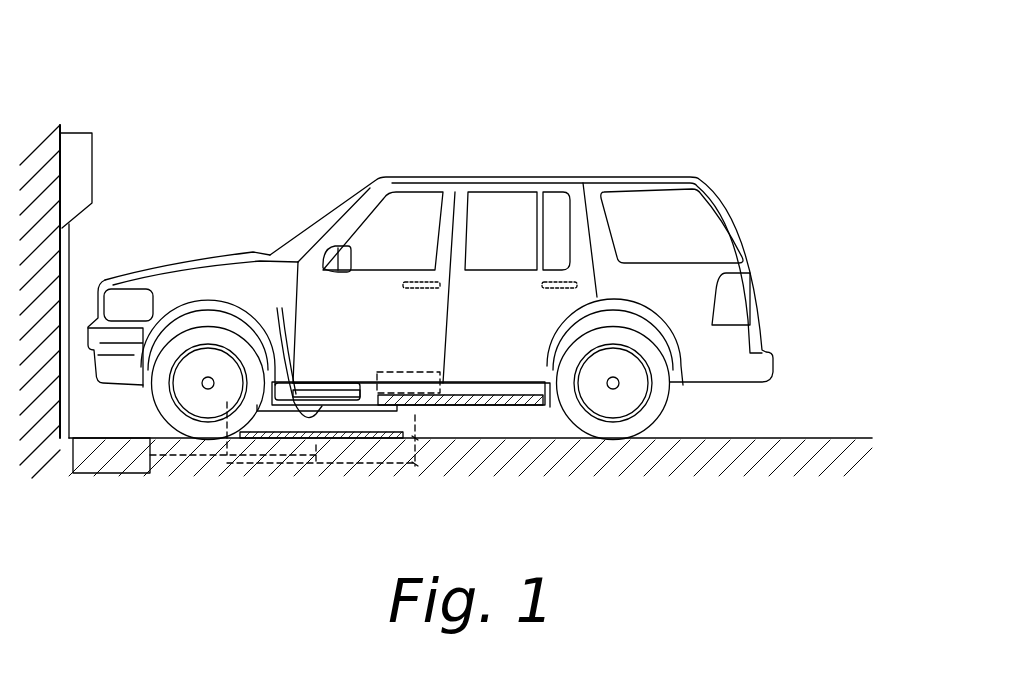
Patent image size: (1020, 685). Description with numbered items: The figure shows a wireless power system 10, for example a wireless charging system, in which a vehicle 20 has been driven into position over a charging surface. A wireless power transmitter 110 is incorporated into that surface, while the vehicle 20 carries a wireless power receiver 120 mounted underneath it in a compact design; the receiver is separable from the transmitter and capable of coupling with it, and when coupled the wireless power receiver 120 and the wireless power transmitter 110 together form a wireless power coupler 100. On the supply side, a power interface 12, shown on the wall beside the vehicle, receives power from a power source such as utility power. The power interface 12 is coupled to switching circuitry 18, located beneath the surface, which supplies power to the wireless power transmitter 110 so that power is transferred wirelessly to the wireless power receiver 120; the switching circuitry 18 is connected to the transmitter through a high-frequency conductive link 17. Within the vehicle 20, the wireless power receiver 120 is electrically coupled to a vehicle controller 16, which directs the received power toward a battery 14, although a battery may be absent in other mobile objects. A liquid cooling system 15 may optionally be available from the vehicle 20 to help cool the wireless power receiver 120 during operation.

The wireless power system 10 is at (562, 80).
The power interface 12 is at (93, 168).
The battery 14 is at (480, 392).
The liquid cooling system 15 is at (394, 372).
The vehicle controller 16 is at (330, 392).
The high-frequency conductive link 17 is at (172, 452).
The switching circuitry 18 is at (150, 465).
The vehicle 20 is at (430, 283).
The wireless power coupler 100 is at (362, 466).
The wireless power transmitter 110 is at (388, 431).
The wireless power receiver 120 is at (290, 351).